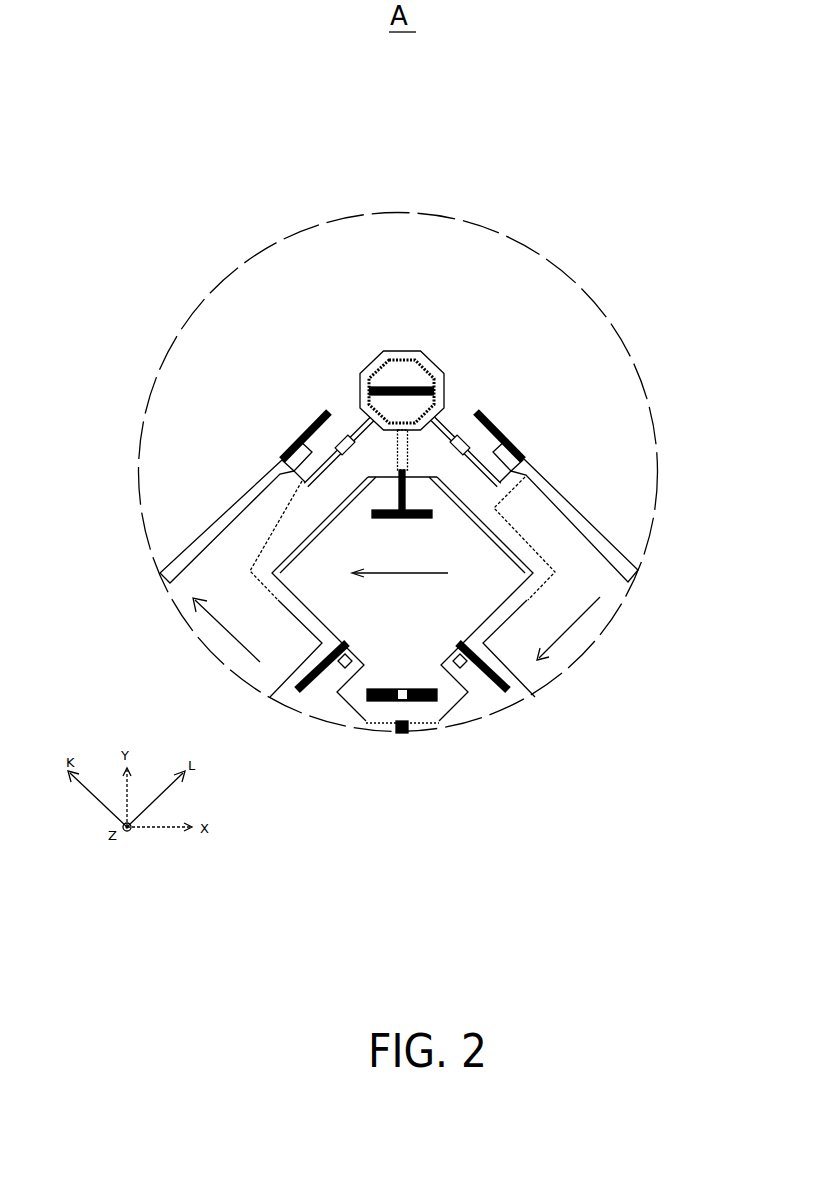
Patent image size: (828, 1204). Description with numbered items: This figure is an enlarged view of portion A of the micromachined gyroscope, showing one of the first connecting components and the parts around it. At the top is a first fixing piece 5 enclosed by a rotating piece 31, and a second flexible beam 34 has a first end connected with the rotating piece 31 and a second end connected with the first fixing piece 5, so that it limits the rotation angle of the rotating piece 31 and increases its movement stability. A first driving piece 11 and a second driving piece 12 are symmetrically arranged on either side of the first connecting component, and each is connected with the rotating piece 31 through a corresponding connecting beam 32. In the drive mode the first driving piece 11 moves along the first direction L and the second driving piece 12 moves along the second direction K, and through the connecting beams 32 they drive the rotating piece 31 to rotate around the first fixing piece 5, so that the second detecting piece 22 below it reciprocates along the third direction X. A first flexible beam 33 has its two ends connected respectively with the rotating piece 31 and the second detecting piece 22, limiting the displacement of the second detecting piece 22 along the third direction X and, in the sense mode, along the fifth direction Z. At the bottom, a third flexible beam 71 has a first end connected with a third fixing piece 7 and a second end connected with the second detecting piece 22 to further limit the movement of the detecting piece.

The first fixing piece 5 is at (405, 376).
The rotating piece 31 is at (372, 363).
The second flexible beam 34 is at (438, 348).
The connecting beam 32 is at (325, 462).
The first driving piece 11 is at (572, 505).
The second driving piece 12 is at (175, 570).
The first flexible beam 33 is at (373, 518).
The second detecting piece 22 is at (415, 627).
The third fixing piece 7 is at (401, 699).
The third flexible beam 71 is at (422, 702).